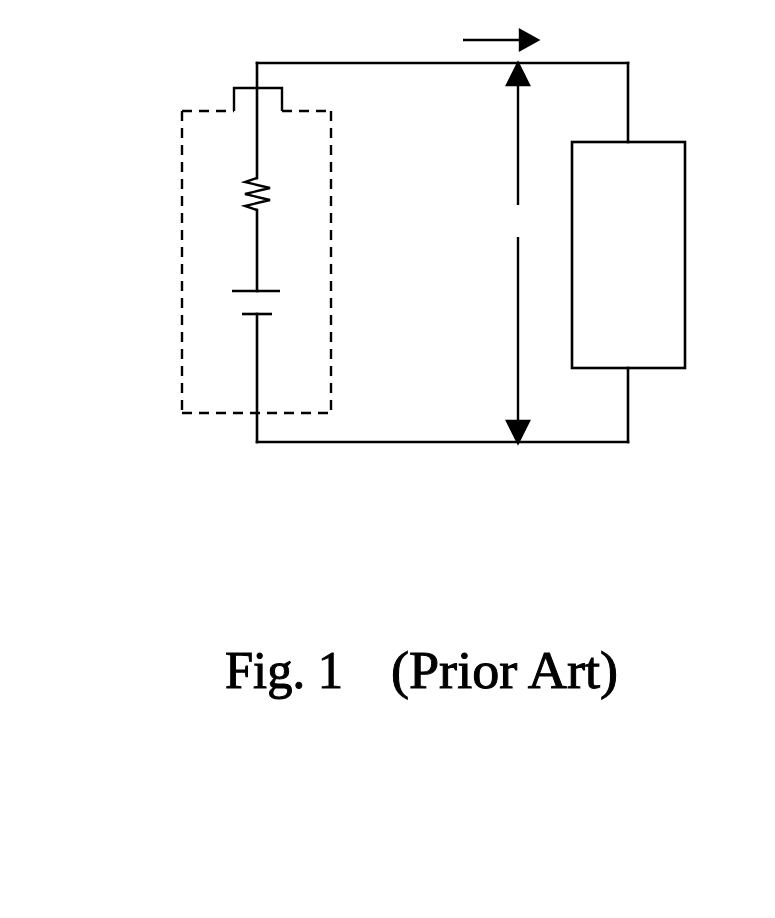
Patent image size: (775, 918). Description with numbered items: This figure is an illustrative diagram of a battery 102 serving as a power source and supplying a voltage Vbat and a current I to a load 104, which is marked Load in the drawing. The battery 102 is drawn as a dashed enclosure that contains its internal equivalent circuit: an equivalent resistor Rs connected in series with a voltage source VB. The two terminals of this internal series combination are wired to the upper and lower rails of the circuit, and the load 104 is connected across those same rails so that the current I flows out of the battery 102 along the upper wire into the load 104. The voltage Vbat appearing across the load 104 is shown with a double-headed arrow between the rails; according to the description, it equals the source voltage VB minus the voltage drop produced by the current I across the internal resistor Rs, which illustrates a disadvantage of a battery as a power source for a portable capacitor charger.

The battery 102 is at (213, 250).
The load 104 is at (668, 255).
The equivalent resistor Rs is at (274, 195).
The voltage source VB is at (271, 309).
The voltage Vbat is at (523, 253).
The current I is at (488, 41).
The load Load is at (628, 255).